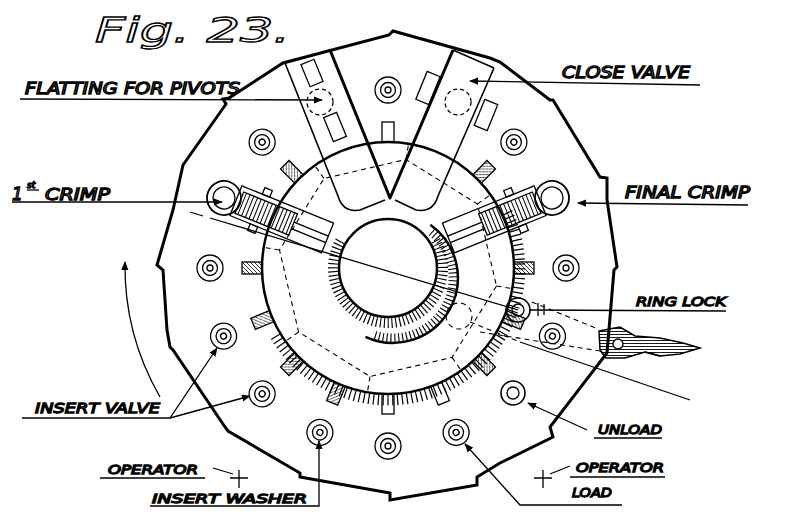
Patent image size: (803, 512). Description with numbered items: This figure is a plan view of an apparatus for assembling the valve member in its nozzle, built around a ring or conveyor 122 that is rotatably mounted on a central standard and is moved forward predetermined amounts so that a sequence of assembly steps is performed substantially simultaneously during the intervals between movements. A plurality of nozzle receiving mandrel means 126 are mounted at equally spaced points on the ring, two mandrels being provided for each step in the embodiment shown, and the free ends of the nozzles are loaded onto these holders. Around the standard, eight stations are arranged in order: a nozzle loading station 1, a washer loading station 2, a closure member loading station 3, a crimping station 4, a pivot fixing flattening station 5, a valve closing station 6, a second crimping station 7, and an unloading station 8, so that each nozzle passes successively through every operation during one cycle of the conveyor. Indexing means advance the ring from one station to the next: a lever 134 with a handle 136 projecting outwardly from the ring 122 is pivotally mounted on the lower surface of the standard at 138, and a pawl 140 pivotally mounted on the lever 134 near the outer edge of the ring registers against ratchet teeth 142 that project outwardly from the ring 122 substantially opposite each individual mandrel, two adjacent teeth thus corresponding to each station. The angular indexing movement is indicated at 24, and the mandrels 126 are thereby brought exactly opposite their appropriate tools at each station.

The turret indexing angle 24 is at (153, 181).
The ring or conveyor 122 is at (432, 473).
The mandrel means 126 is at (521, 385).
The lever 134 is at (618, 334).
The handle 136 is at (687, 341).
The pivot of lever 138 is at (437, 293).
The pawl 140 is at (650, 365).
The ratchet teeth 142 is at (587, 357).
The nozzle loading station 1 is at (396, 348).
The washer loading station 2 is at (330, 340).
The closure member loading station 3 is at (290, 275).
The crimping station 4 is at (312, 193).
The pivot fixing flattening station 5 is at (350, 173).
The valve closing station 6 is at (418, 170).
The second crimping station 7 is at (452, 224).
The unloading station 8 is at (421, 332).